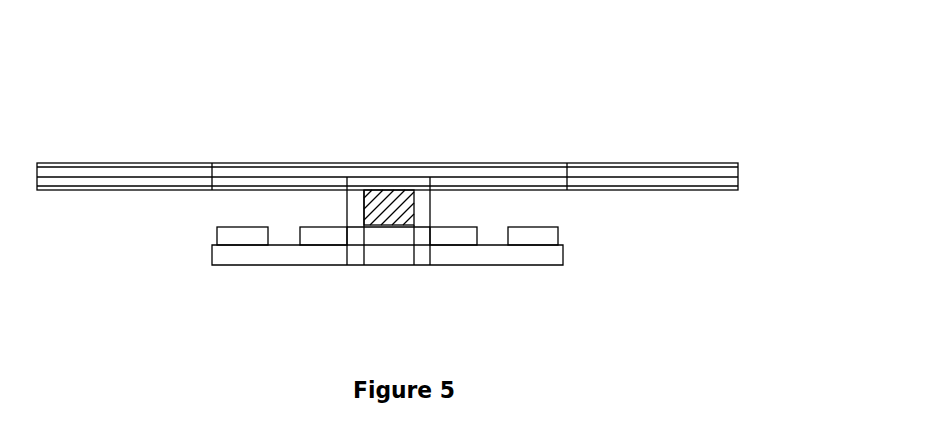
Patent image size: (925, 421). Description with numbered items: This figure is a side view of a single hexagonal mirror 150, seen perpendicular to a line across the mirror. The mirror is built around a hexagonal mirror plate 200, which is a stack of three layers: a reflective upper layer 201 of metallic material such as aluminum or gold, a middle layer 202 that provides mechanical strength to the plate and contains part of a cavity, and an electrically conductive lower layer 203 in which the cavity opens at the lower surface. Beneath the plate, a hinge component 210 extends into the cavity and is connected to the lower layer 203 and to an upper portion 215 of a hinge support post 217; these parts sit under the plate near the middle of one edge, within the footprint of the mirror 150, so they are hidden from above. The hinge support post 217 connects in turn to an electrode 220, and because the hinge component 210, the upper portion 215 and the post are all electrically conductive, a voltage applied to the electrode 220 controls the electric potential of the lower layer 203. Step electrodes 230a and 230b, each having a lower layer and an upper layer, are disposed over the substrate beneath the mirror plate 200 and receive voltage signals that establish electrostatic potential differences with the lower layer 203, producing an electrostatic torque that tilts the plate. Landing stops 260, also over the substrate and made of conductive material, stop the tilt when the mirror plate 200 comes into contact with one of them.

The hexagonal mirror 150 is at (181, 39).
The hexagonal mirror plate 200 is at (430, 173).
The reflective upper layer 201 is at (752, 169).
The middle layer 202 is at (752, 181).
The lower layer 203 is at (752, 192).
The hinge component 210 is at (330, 228).
The upper portion of hinge support post 215 is at (388, 210).
The hinge support post 217 is at (350, 207).
The electrode 220 is at (330, 228).
The step electrode 230a is at (453, 227).
The step electrode 230b is at (325, 226).
The landing stop 260 is at (243, 226).